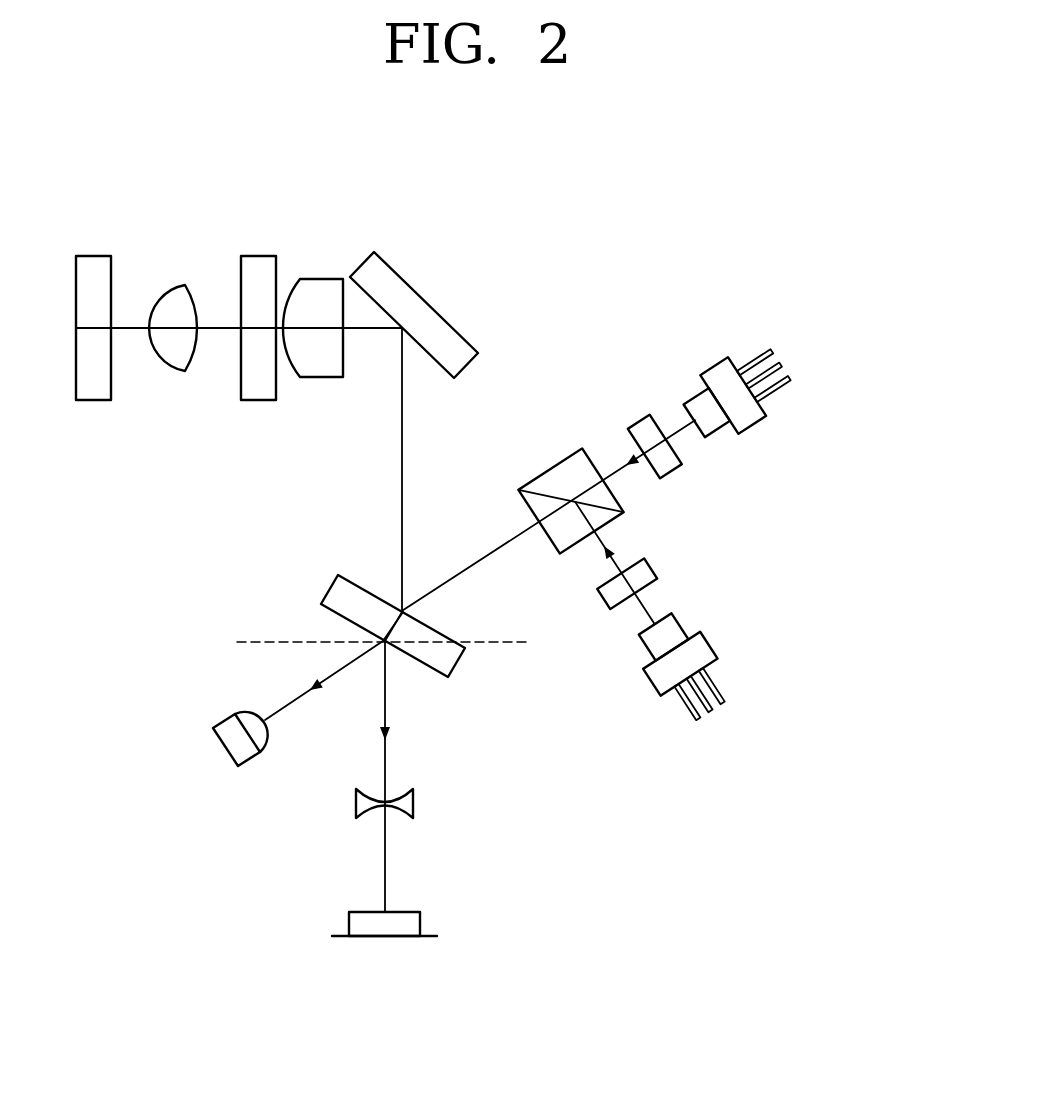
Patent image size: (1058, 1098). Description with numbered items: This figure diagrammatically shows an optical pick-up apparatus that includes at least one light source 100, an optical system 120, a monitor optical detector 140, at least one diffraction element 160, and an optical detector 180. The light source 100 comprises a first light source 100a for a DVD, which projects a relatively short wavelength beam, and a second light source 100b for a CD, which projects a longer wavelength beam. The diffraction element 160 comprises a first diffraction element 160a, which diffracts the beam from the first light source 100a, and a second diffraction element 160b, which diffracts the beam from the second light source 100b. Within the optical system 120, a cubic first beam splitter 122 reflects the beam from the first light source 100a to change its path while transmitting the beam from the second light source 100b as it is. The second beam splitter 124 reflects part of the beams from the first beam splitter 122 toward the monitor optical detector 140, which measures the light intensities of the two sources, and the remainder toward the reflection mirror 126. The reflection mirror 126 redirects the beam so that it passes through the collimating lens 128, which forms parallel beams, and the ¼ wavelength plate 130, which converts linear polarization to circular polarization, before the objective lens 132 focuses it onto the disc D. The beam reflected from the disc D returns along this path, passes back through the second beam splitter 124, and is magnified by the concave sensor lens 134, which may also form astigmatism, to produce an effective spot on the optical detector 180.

The disc D is at (78, 299).
The light source 100 is at (862, 460).
The first light source 100a is at (708, 628).
The second light source 100b is at (752, 417).
The optical system 120 is at (595, 193).
The first beam splitter 122 is at (568, 473).
The second beam splitter 124 is at (363, 590).
The reflection mirror 126 is at (394, 280).
The collimating lens 128 is at (313, 285).
The ¼ wavelength plate 130 is at (256, 262).
The objective lens 132 is at (174, 298).
The sensor lens 134 is at (405, 798).
The monitor optical detector 140 is at (228, 738).
The diffraction element 160 is at (757, 472).
The first diffraction element 160a is at (645, 560).
The second diffraction element 160b is at (670, 468).
The optical detector 180 is at (405, 922).